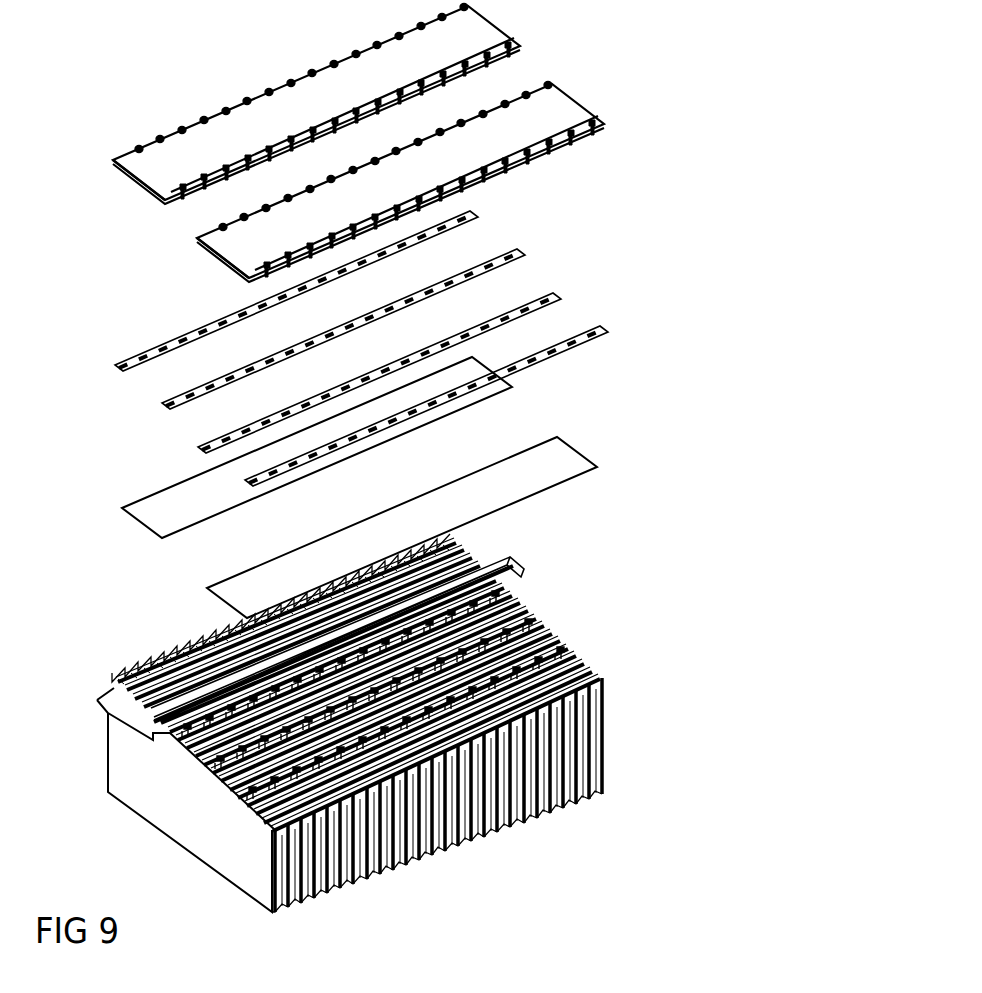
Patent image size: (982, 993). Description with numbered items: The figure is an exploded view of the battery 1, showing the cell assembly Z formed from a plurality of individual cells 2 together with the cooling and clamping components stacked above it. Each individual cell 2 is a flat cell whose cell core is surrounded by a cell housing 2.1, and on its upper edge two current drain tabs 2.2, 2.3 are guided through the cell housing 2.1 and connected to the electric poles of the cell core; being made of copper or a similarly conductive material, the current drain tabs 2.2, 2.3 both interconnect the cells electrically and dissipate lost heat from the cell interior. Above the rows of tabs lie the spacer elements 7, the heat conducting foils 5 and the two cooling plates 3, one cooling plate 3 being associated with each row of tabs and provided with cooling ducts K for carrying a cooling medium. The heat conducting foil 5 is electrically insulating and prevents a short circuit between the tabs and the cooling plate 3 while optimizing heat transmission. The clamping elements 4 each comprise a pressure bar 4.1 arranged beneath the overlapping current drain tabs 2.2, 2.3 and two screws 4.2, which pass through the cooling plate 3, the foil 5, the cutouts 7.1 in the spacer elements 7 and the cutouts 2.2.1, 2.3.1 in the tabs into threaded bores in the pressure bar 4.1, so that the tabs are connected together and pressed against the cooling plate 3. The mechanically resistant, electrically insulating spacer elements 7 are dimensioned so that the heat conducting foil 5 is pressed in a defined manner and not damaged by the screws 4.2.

The battery 1 is at (654, 43).
The individual cell 2 is at (124, 758).
The cell housing 2.1 is at (228, 858).
The current drain tab 2.2 is at (575, 657).
The cutout in current drain tab 2.2.1 is at (540, 628).
The current drain tab 2.3 is at (512, 581).
The cutout in current drain tab 2.3.1 is at (472, 543).
The cooling plate 3 is at (487, 30).
The clamping element 4 is at (344, 413).
The pressure bar 4.1 is at (190, 735).
The screw 4.2 is at (137, 147).
The heat conducting foil 5 is at (566, 453).
The spacer element 7 is at (115, 367).
The cutout in spacer element 7.1 is at (147, 350).
The cooling duct K is at (143, 178).
The cell assembly Z is at (608, 774).